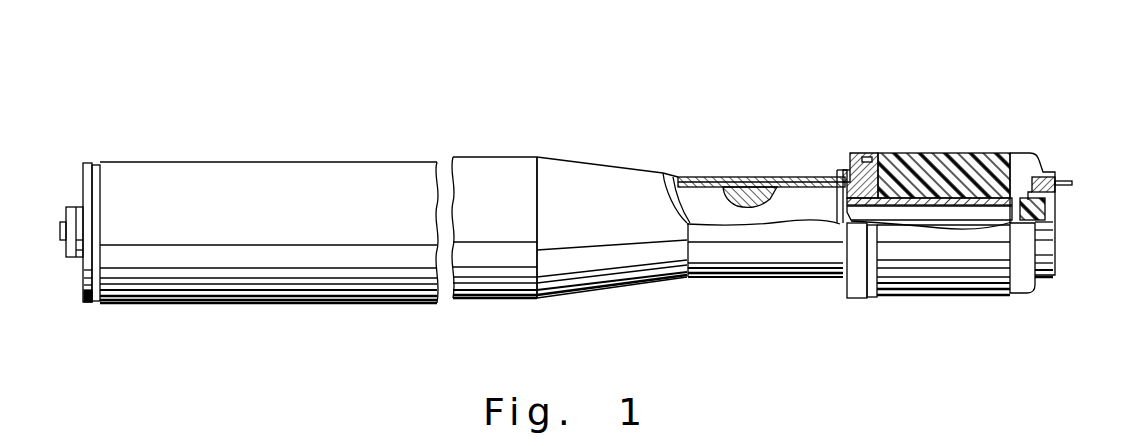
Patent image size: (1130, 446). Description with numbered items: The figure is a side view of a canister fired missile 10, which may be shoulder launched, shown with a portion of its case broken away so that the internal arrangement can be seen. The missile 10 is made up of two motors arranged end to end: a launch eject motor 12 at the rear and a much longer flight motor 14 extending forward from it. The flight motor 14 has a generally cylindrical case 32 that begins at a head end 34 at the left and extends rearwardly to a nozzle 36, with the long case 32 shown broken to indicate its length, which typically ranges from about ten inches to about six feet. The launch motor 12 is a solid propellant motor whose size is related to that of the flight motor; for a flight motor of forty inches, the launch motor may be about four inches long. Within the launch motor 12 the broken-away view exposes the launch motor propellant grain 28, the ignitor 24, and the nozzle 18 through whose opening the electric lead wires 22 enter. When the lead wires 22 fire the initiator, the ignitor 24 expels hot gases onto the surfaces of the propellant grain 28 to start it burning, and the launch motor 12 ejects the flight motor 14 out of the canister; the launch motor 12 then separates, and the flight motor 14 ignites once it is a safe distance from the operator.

The canister fired missile 10 is at (612, 140).
The launch eject motor 12 is at (975, 294).
The flight motor 14 is at (240, 162).
The nozzle 18 is at (1043, 172).
The electric lead wires 22 is at (1073, 193).
The ignitor 24 is at (1046, 208).
The launch motor propellant grain 28 is at (910, 173).
The flight motor case 32 is at (752, 176).
The head end 34 is at (83, 178).
The nozzle 36 is at (808, 184).